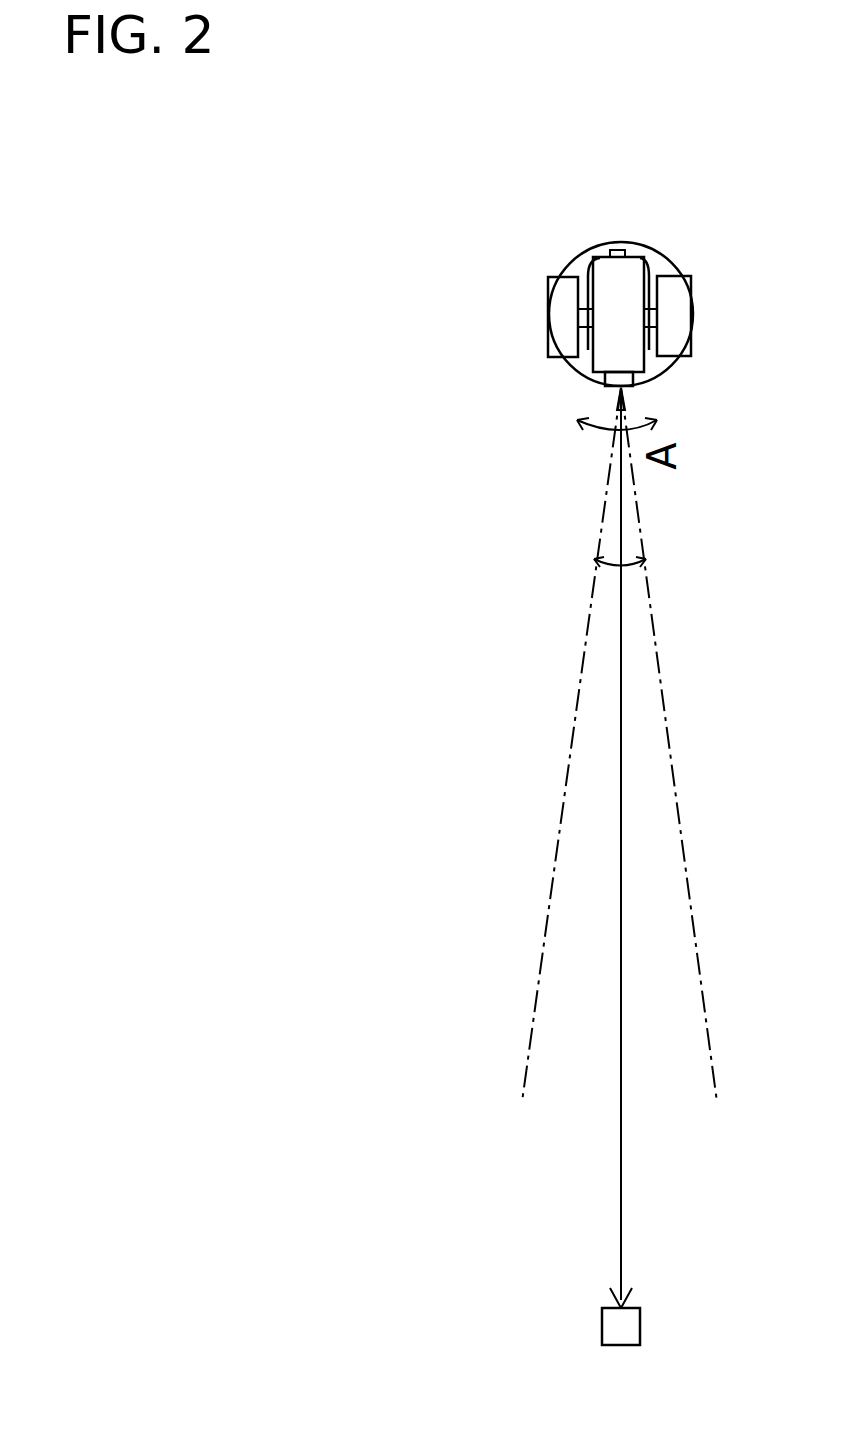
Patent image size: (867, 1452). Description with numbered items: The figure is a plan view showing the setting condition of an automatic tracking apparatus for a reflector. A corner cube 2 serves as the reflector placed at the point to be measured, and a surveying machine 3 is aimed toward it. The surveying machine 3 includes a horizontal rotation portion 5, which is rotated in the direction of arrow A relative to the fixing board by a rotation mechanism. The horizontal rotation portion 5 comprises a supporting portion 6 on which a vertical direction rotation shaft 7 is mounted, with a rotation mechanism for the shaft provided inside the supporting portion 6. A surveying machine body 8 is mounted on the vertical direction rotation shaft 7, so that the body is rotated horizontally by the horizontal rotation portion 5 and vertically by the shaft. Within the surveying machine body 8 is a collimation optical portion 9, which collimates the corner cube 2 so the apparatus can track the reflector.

The corner cube 2 is at (602, 1325).
The surveying machine 3 is at (538, 347).
The horizontal rotation portion 5 is at (587, 245).
The supporting portion 6 is at (558, 315).
The vertical direction rotation shaft 7 is at (583, 258).
The surveying machine body 8 is at (632, 272).
The collimation optical portion 9 is at (628, 378).